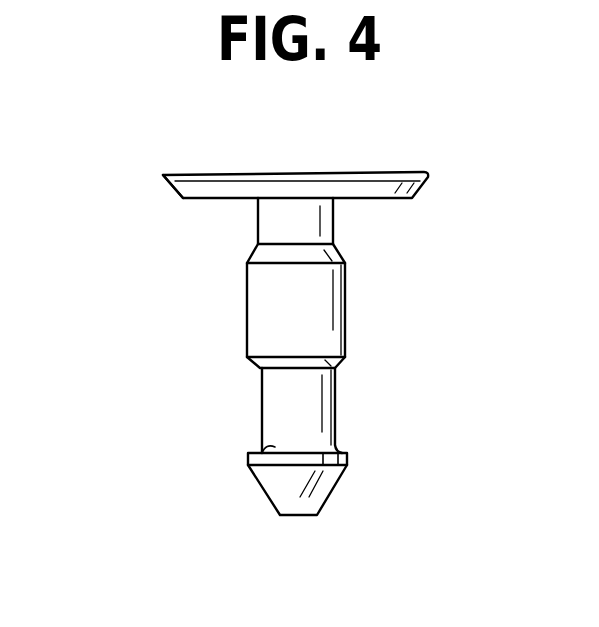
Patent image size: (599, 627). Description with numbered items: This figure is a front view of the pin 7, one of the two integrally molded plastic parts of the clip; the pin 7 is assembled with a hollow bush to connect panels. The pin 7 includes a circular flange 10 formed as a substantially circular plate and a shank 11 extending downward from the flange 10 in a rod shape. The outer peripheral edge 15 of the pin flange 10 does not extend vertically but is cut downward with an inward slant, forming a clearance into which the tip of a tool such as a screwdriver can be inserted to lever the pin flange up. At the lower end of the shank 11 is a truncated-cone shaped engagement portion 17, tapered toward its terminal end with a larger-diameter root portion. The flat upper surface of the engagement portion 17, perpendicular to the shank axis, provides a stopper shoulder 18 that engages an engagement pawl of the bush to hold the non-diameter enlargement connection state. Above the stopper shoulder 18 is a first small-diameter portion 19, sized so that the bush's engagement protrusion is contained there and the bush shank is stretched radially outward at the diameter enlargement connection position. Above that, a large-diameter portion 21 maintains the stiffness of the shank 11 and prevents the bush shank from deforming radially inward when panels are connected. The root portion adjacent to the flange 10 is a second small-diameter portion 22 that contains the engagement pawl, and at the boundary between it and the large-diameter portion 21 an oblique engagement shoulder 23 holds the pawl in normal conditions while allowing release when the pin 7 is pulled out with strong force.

The pin 7 is at (156, 420).
The pin flange 10 is at (238, 187).
The shank of the pin 11 is at (365, 205).
The outer peripheral edge of the pin flange 15 is at (174, 189).
The engagement portion 17 is at (285, 487).
The stopper shoulder 18 is at (263, 448).
The first small-diameter portion 19 is at (273, 408).
The large-diameter portion 21 is at (268, 300).
The second small-diameter portion 22 is at (273, 214).
The engagement shoulder 23 is at (250, 253).